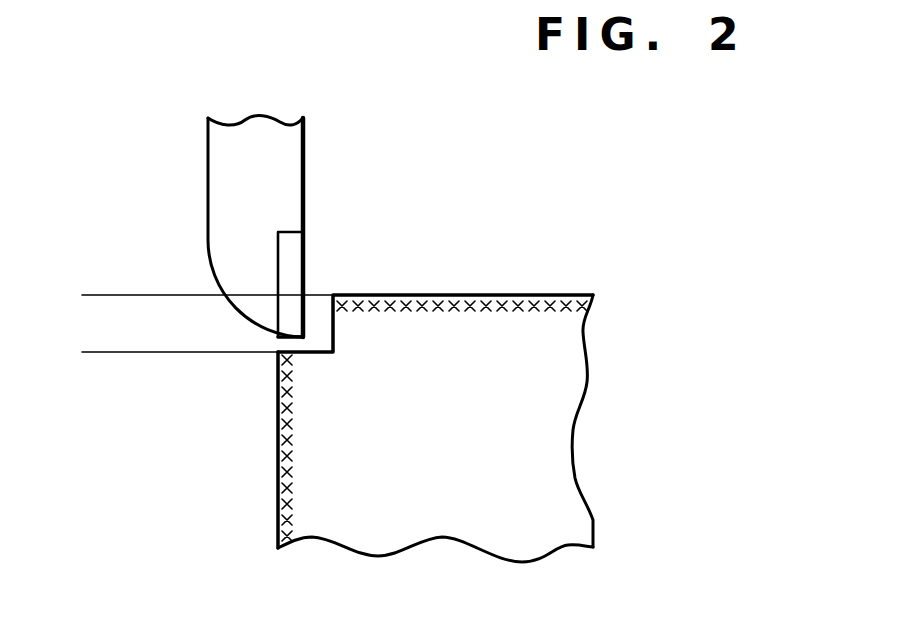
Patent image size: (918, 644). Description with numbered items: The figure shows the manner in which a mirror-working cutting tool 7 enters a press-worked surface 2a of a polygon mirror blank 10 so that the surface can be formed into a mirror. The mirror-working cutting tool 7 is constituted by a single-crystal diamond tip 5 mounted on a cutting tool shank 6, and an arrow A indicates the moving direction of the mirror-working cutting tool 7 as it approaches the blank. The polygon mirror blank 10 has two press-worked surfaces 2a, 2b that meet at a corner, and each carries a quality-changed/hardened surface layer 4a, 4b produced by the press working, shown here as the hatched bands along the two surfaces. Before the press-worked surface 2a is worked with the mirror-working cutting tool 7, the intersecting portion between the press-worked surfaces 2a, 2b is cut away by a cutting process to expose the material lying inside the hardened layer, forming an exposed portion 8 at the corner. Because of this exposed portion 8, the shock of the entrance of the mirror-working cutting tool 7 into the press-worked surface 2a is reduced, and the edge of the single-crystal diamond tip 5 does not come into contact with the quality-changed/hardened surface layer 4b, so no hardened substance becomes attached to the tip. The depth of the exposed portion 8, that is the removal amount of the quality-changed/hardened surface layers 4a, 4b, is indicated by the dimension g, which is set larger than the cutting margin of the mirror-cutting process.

The press-worked surface 2a is at (462, 309).
The press-worked surface 2b is at (306, 448).
The quality-changed/hardened surface layer 4a is at (534, 316).
The quality-changed/hardened surface layer 4b is at (292, 485).
The single-crystal diamond tip 5 is at (292, 262).
The cutting tool shank 6 is at (280, 180).
The mirror-working cutting tool 7 is at (227, 226).
The exposed portion 8 is at (345, 307).
The polygon mirror blank 10 is at (588, 398).
The dimension g is at (103, 295).
The arrow A is at (410, 126).